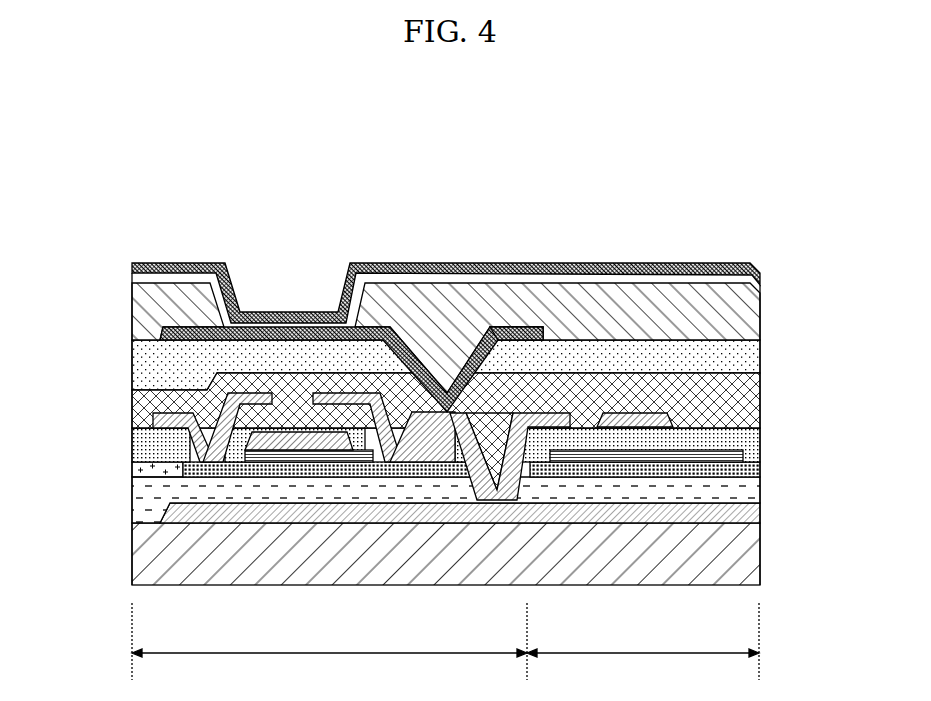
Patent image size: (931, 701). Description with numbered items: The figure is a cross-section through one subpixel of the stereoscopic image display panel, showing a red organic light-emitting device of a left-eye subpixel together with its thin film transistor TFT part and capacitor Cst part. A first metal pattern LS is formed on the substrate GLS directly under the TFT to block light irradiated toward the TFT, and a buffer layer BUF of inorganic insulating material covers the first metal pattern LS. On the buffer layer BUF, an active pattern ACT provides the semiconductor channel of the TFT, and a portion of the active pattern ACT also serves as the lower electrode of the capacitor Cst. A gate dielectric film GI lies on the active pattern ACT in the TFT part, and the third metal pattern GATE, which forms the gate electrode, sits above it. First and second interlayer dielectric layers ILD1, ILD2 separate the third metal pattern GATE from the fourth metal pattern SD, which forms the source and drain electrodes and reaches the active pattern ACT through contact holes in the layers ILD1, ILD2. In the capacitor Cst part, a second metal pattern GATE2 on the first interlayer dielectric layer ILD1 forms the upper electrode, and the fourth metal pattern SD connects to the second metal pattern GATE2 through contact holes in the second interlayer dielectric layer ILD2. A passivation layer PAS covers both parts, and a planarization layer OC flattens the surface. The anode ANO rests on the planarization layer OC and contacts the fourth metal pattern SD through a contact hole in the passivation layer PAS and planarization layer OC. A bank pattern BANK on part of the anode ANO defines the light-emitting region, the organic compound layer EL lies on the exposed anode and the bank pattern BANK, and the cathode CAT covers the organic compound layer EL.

The substrate GLS is at (762, 547).
The first metal pattern LS is at (762, 508).
The buffer layer BUF is at (762, 483).
The first interlayer dielectric layer ILD1 is at (130, 467).
The active pattern ACT is at (762, 472).
The second interlayer dielectric layer ILD2 is at (130, 447).
The gate dielectric film GI is at (278, 458).
The third metal pattern GATE is at (338, 448).
The planarization layer OC is at (258, 345).
The passivation layer PAS is at (762, 396).
The bank pattern BANK is at (762, 306).
The organic compound layer EL is at (580, 280).
The fourth metal pattern SD is at (355, 393).
The second metal pattern GATE2 is at (762, 437).
The anode ANO is at (508, 327).
The cathode CAT is at (430, 263).
The thin film transistor TFT is at (329, 643).
The capacitor Cst is at (643, 643).